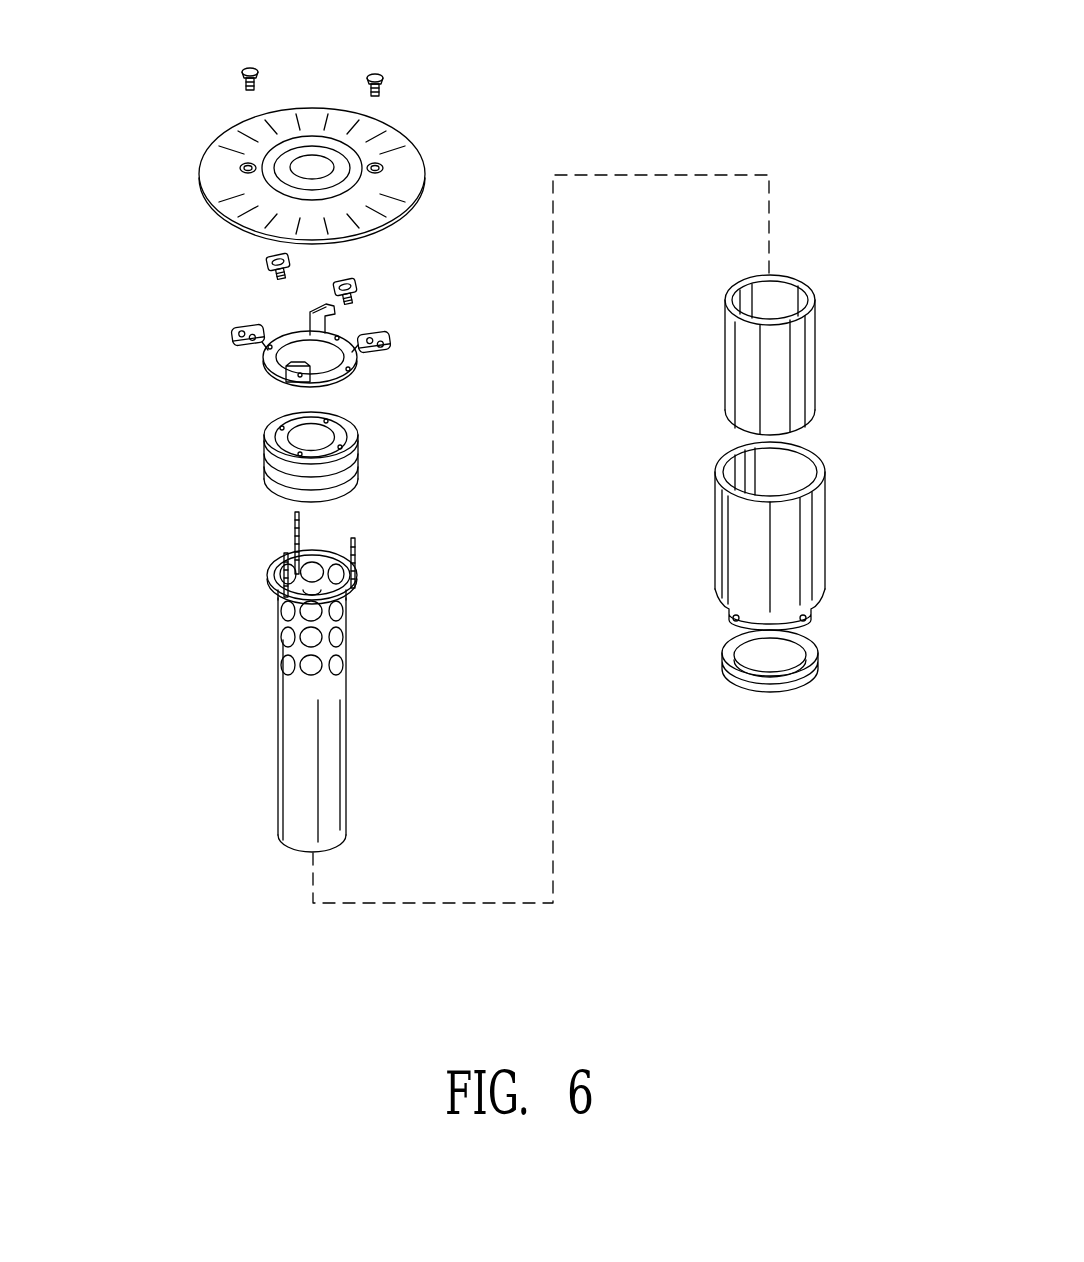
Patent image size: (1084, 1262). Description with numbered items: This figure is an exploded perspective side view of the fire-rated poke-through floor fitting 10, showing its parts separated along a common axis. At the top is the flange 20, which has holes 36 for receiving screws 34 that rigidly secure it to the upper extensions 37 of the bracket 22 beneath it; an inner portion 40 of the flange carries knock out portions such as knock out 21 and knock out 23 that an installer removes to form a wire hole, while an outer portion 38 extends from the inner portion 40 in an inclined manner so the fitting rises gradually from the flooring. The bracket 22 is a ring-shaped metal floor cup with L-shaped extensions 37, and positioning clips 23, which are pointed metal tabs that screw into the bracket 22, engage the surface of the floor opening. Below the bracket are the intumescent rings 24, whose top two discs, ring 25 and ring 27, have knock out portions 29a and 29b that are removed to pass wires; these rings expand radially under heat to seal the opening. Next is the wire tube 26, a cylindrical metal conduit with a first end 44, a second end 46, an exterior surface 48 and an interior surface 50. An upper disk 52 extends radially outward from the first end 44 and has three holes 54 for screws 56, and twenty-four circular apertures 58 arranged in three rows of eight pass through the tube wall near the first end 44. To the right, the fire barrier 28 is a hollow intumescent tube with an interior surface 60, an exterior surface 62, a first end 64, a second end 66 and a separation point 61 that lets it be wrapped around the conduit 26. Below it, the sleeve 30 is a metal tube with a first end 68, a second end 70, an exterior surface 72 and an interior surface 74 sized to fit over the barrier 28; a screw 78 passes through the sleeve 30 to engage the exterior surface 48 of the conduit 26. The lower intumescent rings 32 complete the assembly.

The fitting 10 is at (134, 232).
The flange 20 is at (440, 117).
The knock out portion 21 is at (300, 163).
The bracket 22 is at (370, 310).
The positioning clips 23 is at (222, 204).
The intumescent rings 24 is at (316, 435).
The top ring 25 is at (270, 426).
The wire tube 26 is at (290, 671).
The second ring 27 is at (268, 460).
The fire barrier 28 is at (796, 310).
The knock out portion 29a is at (312, 438).
The knock out portion 29b is at (346, 434).
The sleeve 30 is at (787, 526).
The intumescent rings 32 is at (853, 668).
The screws 34 is at (252, 70).
The holes 36 is at (240, 166).
The upper extensions 37 is at (238, 336).
The outer portion 38 is at (395, 197).
The inner portion 40 is at (300, 165).
The first end 44 is at (355, 595).
The second end 46 is at (340, 840).
The exterior surface 48 is at (330, 757).
The interior surface 50 is at (322, 563).
The upper disk 52 is at (286, 595).
The holes 54 is at (290, 557).
The screws 56 is at (296, 513).
The apertures 58 is at (285, 678).
The interior surface 60 is at (778, 296).
The separation point 61 is at (808, 288).
The exterior surface 62 is at (793, 347).
The first end 64 is at (730, 293).
The second end 66 is at (806, 418).
The first end 68 is at (716, 472).
The second end 70 is at (817, 602).
The exterior surface 72 is at (787, 572).
The interior surface 74 is at (786, 468).
The screw 78 is at (803, 620).